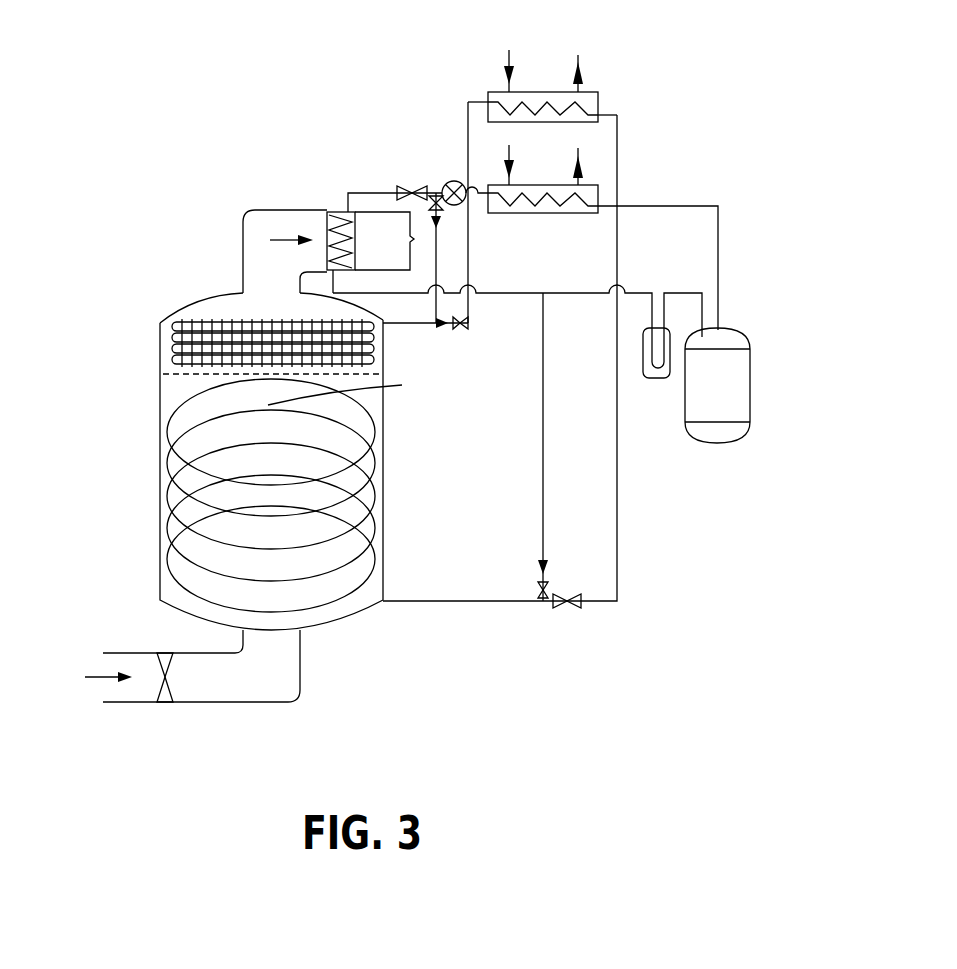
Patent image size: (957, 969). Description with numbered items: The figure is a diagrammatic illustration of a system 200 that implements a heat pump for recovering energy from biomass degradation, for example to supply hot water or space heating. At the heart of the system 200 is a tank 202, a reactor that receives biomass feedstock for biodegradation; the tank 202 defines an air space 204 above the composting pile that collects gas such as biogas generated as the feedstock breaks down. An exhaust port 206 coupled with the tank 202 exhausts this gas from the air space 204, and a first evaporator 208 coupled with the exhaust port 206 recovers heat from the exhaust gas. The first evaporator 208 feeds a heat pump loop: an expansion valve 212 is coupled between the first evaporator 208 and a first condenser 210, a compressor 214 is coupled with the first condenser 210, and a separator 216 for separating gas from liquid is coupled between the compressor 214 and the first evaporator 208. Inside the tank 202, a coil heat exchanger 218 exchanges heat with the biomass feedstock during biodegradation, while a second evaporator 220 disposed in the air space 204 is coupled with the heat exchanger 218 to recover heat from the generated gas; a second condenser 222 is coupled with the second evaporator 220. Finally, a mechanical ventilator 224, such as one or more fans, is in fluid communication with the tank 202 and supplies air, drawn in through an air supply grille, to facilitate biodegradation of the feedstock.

The system 200 is at (852, 130).
The tank 202 is at (160, 537).
The air space 204 is at (208, 318).
The exhaust port 206 is at (254, 225).
The first evaporator 208 is at (326, 228).
The first condenser 210 is at (590, 183).
The expansion valve 212 is at (452, 181).
The compressor 214 is at (750, 385).
The separator 216 is at (657, 378).
The heat exchanger 218 is at (383, 545).
The second evaporator 220 is at (176, 342).
The second condenser 222 is at (590, 90).
The mechanical ventilator 224 is at (157, 660).